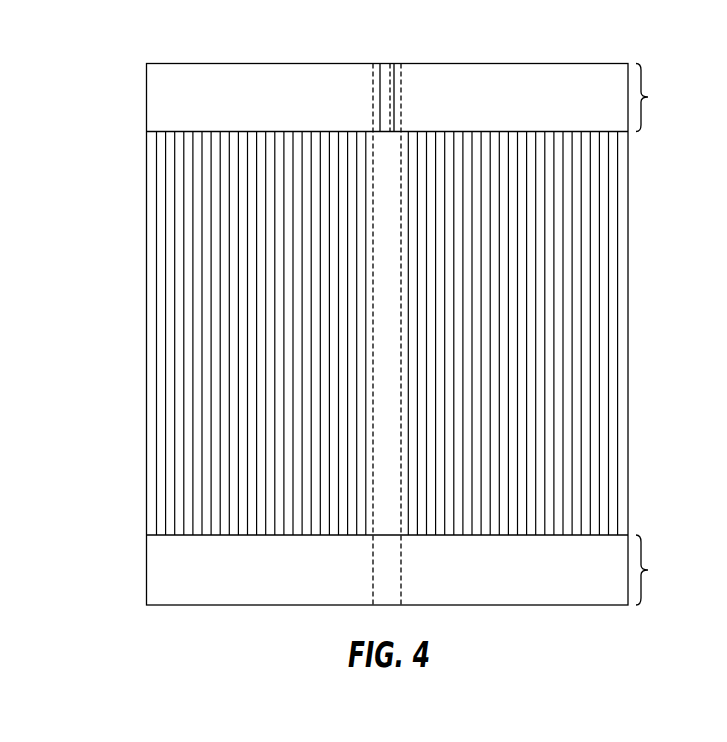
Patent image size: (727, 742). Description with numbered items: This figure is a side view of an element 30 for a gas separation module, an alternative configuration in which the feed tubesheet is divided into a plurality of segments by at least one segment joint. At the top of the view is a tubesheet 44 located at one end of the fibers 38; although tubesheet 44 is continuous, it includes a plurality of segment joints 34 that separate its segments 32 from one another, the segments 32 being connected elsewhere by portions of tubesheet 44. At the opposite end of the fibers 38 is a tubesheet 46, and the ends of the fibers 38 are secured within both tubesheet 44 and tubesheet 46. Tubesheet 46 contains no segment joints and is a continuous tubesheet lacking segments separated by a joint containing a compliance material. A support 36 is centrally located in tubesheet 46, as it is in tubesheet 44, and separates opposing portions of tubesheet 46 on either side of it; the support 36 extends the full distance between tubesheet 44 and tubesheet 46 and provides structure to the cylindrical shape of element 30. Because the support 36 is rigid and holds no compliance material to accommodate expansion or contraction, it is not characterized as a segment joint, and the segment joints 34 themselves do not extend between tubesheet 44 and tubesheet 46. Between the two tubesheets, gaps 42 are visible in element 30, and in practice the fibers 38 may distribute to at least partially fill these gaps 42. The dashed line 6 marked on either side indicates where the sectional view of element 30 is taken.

The element 30 is at (106, 49).
The segments 32 is at (239, 110).
The segment joints 34 is at (393, 64).
The support 36 is at (403, 108).
The fibers 38 is at (276, 435).
The gaps 42 is at (391, 311).
The tubesheet 44 is at (415, 98).
The tubesheet 46 is at (415, 570).
The line 6- 6 is at (146, 335).